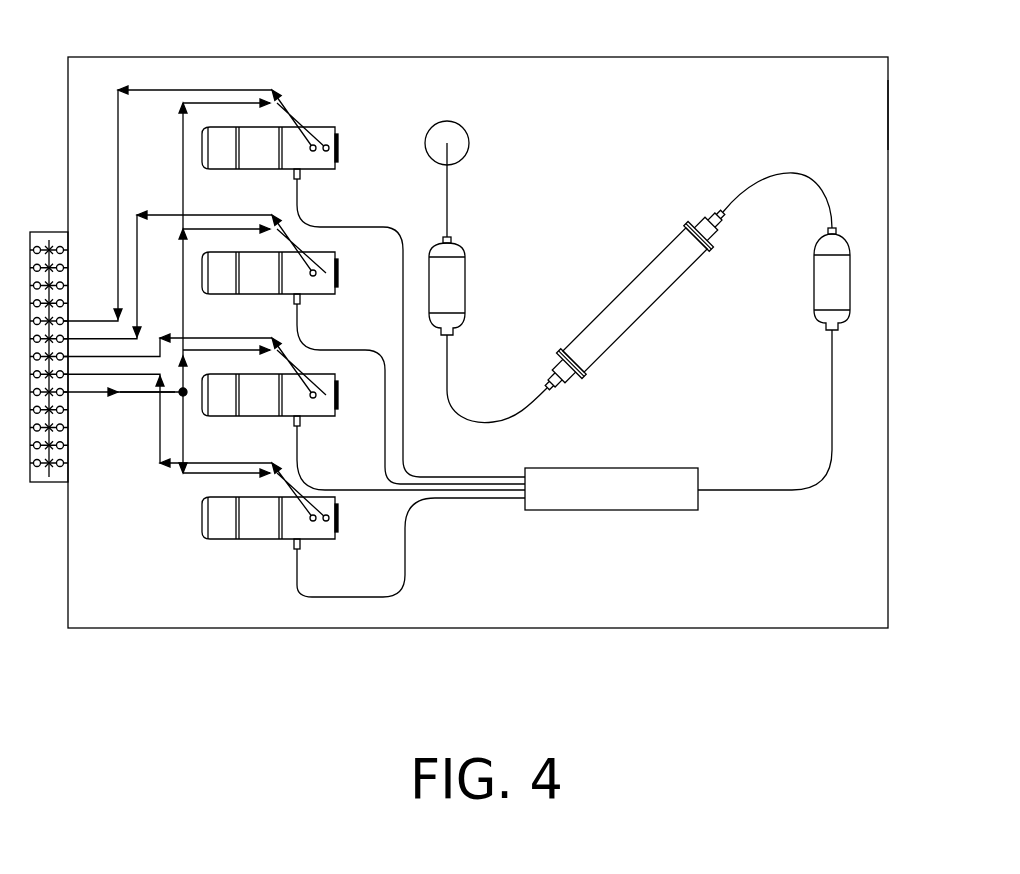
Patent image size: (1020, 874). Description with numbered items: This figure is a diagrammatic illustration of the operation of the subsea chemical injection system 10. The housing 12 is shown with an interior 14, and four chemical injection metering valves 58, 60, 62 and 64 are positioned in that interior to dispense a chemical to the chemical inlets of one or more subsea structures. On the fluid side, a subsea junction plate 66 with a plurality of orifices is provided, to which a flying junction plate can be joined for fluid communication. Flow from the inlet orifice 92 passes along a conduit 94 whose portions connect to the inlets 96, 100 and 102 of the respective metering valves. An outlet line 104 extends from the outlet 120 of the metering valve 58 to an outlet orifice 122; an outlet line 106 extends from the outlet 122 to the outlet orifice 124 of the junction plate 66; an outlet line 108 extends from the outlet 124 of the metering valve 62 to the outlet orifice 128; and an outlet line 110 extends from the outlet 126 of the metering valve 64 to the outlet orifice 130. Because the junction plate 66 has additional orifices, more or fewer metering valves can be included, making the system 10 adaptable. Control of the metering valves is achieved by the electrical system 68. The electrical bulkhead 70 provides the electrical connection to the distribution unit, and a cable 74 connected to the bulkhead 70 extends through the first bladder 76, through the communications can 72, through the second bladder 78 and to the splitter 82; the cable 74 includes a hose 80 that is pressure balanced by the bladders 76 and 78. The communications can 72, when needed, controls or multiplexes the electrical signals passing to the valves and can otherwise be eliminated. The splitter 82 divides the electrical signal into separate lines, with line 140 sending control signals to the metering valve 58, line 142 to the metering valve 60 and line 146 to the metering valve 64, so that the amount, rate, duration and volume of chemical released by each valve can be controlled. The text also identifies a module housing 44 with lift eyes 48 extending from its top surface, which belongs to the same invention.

The subsea chemical injection system 10 is at (673, 37).
The housing 12 is at (540, 57).
The interior 14 is at (877, 118).
The housing 44 is at (367, 352).
The lift eyes 48 is at (308, 402).
The chemical injection metering valve 58 is at (265, 540).
The chemical injection metering valve 60 is at (327, 417).
The chemical injection metering valve 62 is at (325, 294).
The chemical injection metering valve 64 is at (323, 170).
The subsea junction plate 66 is at (47, 232).
The electrical system 68 is at (652, 196).
The electrical bulkhead 70 is at (447, 121).
The communications can 72 is at (606, 300).
The cable 74 is at (447, 201).
The first bladder 76 is at (437, 237).
The second bladder 78 is at (851, 277).
The hose 80 is at (449, 388).
The splitter 82 is at (632, 468).
The inlet orifice 92 is at (67, 386).
The conduit 94 is at (132, 394).
The inlet 96 is at (316, 525).
The inlet 100 is at (310, 280).
The inlet 102 is at (310, 158).
The outlet line 104 is at (247, 462).
The outlet line 106 is at (247, 337).
The outlet line 108 is at (172, 213).
The outlet line 110 is at (298, 117).
The outlet 120 is at (333, 518).
The outlet orifice 122 is at (67, 369).
The outlet orifice 124 is at (67, 351).
The outlet 126 is at (333, 148).
The outlet orifice 128 is at (67, 333).
The outlet orifice 130 is at (64, 319).
The line 140 is at (406, 575).
The line 142 is at (351, 488).
The line 146 is at (406, 432).